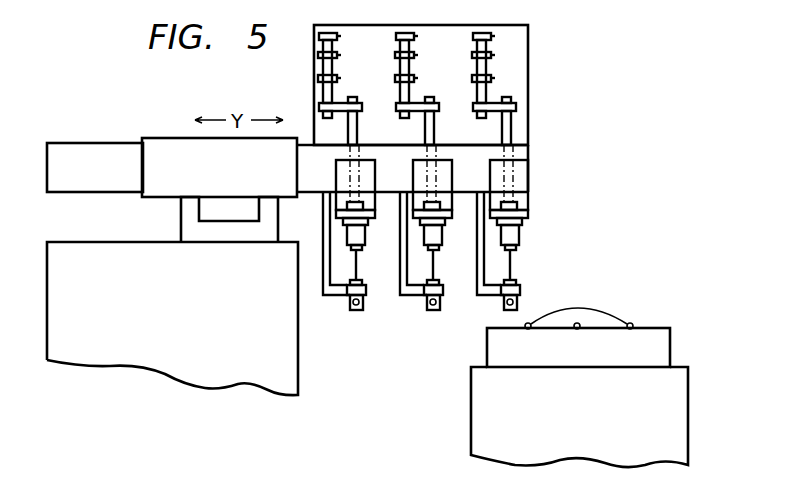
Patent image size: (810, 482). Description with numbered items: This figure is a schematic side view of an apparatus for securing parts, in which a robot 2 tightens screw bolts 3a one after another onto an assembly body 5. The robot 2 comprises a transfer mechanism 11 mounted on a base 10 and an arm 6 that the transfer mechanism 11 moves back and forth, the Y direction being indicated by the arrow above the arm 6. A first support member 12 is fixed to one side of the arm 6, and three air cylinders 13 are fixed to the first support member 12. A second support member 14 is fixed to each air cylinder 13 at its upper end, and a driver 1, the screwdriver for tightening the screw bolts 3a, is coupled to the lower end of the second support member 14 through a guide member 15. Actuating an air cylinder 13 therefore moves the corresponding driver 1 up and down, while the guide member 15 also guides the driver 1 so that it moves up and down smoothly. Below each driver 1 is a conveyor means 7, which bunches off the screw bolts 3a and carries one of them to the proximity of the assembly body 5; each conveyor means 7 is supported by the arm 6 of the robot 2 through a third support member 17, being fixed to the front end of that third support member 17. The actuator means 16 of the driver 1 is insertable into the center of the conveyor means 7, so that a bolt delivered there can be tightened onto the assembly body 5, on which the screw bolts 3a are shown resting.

The screwdriver 1 is at (365, 237).
The robot 2 is at (107, 142).
The screw bolts 3a is at (579, 322).
The assembly body 5 is at (670, 336).
The arm 6 is at (522, 150).
The conveyor means 7 is at (357, 311).
The base 10 is at (298, 366).
The transfer mechanism 11 is at (181, 226).
The first support member 12 is at (521, 44).
The air cylinder 13 is at (338, 64).
The second support member 14 is at (357, 128).
The guide member 15 is at (374, 214).
The actuator means 16 is at (357, 268).
The third support member 17 is at (326, 297).